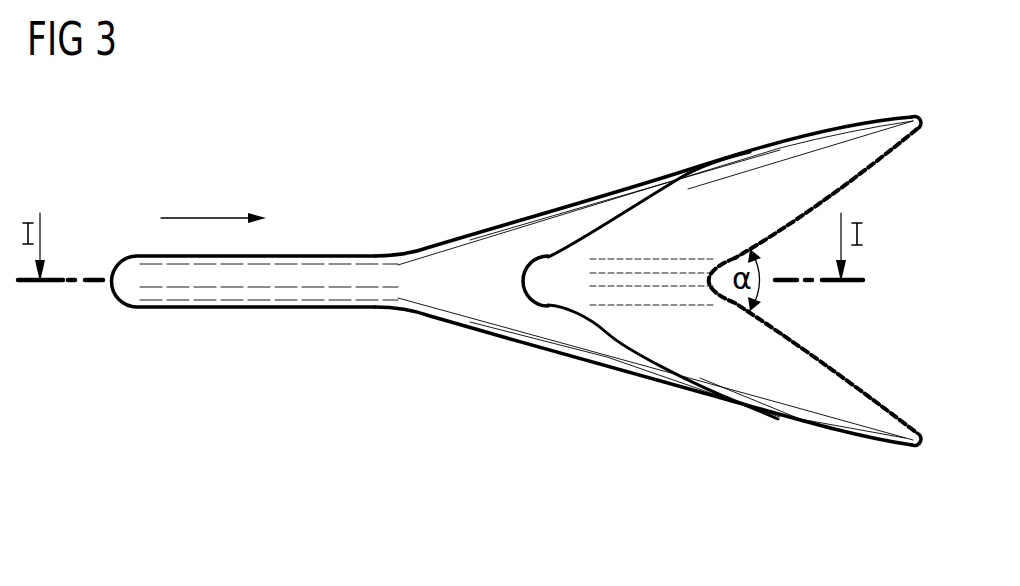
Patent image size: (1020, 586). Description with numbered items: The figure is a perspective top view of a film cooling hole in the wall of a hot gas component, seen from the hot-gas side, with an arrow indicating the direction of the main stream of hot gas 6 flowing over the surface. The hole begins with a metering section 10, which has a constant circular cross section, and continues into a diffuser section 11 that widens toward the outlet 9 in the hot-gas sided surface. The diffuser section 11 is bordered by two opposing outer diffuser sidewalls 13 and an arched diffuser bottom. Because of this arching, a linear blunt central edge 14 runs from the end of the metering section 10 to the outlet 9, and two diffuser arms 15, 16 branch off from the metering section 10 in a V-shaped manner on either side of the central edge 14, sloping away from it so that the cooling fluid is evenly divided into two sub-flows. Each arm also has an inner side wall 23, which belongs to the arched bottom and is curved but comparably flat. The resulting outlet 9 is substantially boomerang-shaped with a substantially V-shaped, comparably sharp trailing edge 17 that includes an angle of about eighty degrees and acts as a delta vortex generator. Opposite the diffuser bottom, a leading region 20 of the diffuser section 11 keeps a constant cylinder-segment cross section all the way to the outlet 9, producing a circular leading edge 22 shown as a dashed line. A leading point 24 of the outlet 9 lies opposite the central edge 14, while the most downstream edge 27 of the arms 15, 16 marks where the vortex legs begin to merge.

The hot gas 6 is at (210, 217).
The outlet 9 is at (672, 170).
The metering section 10 is at (113, 313).
The diffuser section 11 is at (918, 503).
The diffuser sidewalls 13 is at (612, 200).
The central edge 14 is at (681, 283).
The diffuser arm 15 is at (817, 417).
The diffuser arm 16 is at (815, 147).
The trailing edge 17 is at (775, 230).
The leading region 20 is at (548, 282).
The leading edge 22 is at (525, 298).
The inner side walls 23 is at (866, 157).
The leading point 24 is at (523, 280).
The most downstream edge 27 is at (919, 121).